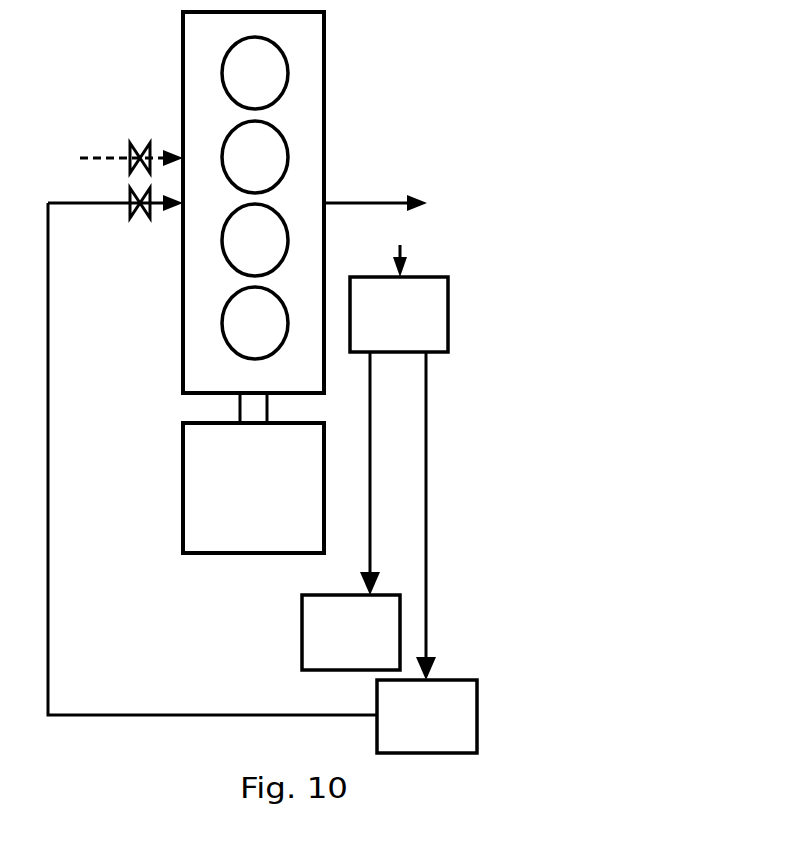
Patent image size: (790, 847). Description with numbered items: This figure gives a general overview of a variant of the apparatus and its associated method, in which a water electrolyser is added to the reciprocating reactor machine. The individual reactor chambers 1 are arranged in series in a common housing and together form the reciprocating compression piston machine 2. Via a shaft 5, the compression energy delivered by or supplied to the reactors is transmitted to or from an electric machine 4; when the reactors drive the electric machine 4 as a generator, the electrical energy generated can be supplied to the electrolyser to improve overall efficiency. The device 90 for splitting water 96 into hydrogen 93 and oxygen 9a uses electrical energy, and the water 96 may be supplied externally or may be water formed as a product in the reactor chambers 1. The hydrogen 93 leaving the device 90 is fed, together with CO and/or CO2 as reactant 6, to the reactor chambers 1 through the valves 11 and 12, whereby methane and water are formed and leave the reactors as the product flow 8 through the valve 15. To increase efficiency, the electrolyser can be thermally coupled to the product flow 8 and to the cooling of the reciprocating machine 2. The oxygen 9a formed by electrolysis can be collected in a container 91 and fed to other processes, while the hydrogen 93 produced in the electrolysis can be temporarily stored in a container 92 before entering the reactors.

The reactor chambers 1 is at (267, 73).
The reciprocating compression piston machine 2 is at (253, 202).
The electric machine 4 is at (253, 488).
The shaft 5 is at (255, 412).
The reactant (CO and/or CO2) 6 is at (131, 146).
The products 8 is at (375, 193).
The valve 11 is at (140, 150).
The valve 12 is at (115, 196).
The valve 15 is at (394, 80).
The device for splitting water 90 is at (399, 314).
The container 91 is at (351, 632).
The container 92 is at (427, 716).
The hydrogen 93 is at (257, 459).
The water 96 is at (377, 262).
The oxygen 9a is at (384, 473).